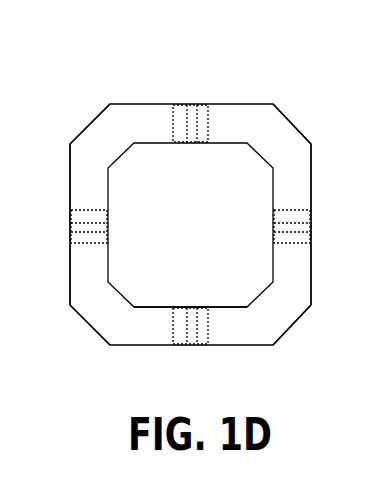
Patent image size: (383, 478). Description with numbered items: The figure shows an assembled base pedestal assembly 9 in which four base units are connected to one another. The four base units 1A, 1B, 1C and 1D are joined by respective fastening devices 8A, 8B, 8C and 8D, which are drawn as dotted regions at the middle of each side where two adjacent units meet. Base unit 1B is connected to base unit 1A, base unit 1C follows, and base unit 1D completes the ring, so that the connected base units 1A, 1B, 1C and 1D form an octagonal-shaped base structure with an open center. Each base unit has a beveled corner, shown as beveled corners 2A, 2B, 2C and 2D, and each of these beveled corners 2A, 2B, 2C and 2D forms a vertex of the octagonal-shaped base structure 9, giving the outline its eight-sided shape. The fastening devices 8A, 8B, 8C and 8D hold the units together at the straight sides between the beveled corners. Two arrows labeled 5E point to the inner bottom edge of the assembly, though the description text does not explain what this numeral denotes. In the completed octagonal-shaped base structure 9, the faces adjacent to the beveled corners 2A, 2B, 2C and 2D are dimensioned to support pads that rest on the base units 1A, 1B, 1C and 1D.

The base pedestal assembly 9 is at (240, 66).
The base unit 1A is at (70, 287).
The base unit 1B is at (70, 175).
The base unit 1C is at (311, 173).
The base unit 1D is at (311, 285).
The beveled corner 2A is at (88, 327).
The beveled corner 2B is at (87, 127).
The beveled corner 2C is at (294, 125).
The beveled corner 2D is at (292, 327).
The fastening device 8A is at (107, 227).
The fastening device 8B is at (192, 143).
The fastening device 8C is at (274, 227).
The fastening device 8D is at (192, 345).
The inner edge 5E is at (173, 327).